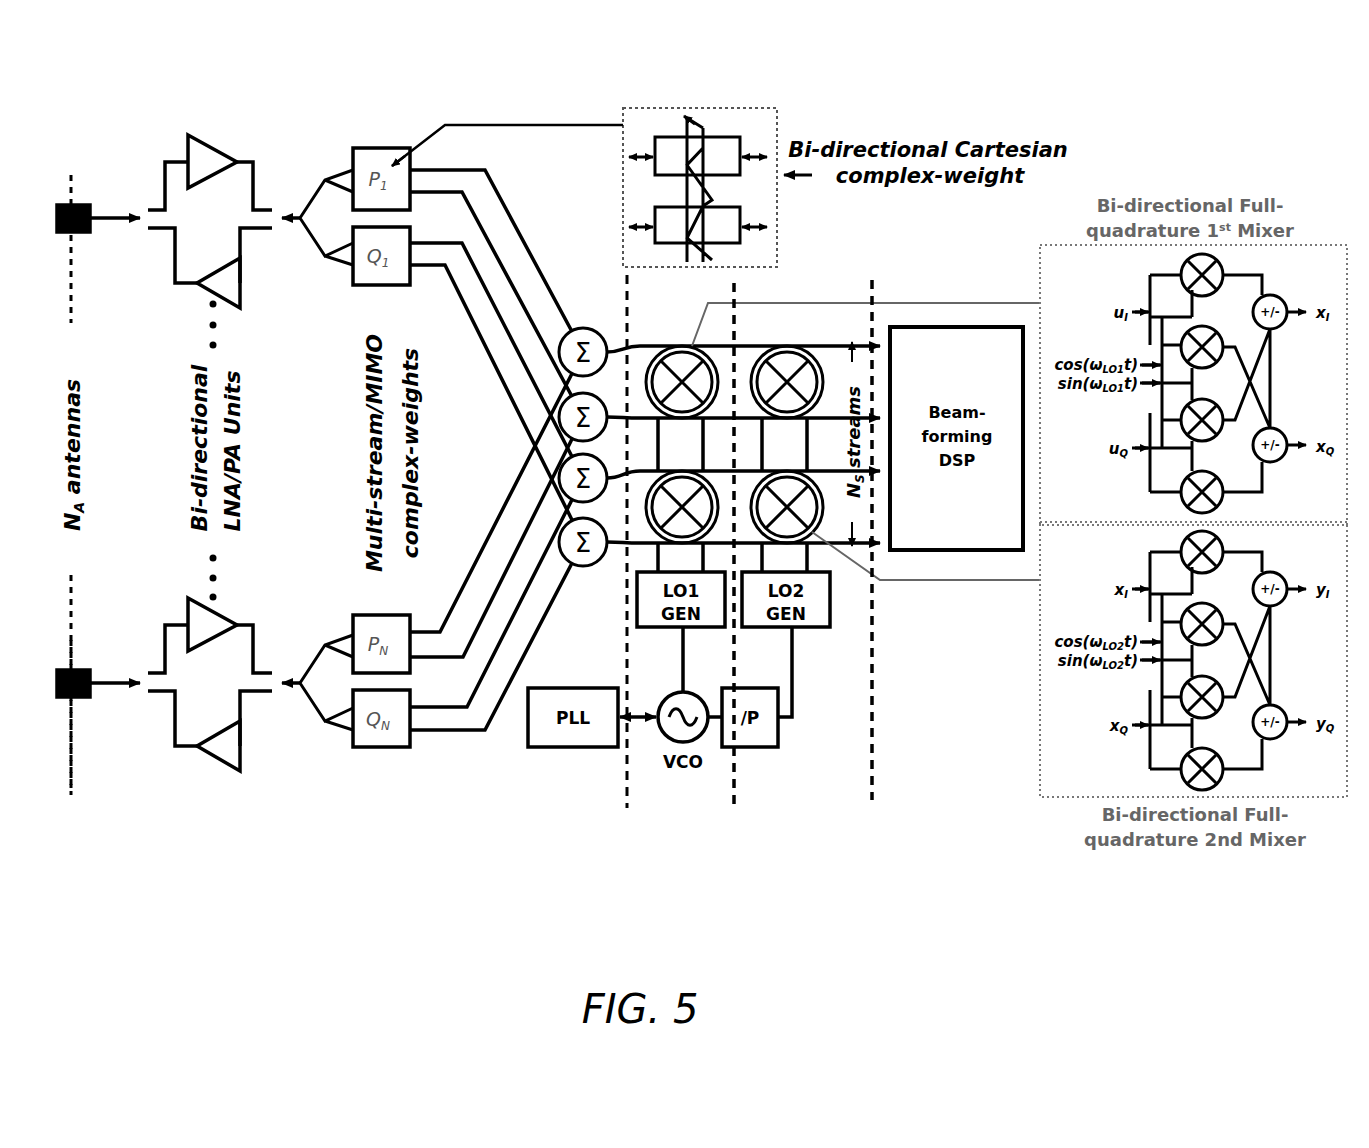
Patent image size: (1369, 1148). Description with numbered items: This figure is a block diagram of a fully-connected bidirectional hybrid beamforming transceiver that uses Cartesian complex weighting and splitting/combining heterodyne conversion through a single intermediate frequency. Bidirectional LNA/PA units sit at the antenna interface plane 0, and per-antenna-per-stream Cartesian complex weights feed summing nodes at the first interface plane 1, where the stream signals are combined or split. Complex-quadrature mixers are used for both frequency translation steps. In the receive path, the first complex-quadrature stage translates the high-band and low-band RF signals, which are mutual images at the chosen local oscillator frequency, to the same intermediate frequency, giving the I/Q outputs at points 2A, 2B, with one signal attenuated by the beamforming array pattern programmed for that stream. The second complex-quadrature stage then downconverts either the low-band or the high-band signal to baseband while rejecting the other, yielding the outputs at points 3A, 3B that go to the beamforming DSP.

The antenna interface plane 0 is at (72, 707).
The first interface plane (after summers) 1 is at (626, 559).
The first complex-quadrature stage output waveform 2A is at (719, 564).
The first complex-quadrature stage output waveform 2B is at (749, 564).
The second complex-quadrature stage output waveform 3A is at (857, 562).
The second complex-quadrature stage output waveform 3B is at (887, 562).